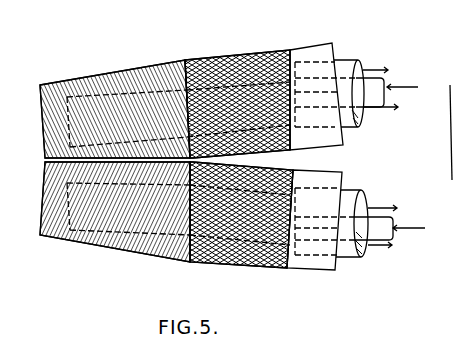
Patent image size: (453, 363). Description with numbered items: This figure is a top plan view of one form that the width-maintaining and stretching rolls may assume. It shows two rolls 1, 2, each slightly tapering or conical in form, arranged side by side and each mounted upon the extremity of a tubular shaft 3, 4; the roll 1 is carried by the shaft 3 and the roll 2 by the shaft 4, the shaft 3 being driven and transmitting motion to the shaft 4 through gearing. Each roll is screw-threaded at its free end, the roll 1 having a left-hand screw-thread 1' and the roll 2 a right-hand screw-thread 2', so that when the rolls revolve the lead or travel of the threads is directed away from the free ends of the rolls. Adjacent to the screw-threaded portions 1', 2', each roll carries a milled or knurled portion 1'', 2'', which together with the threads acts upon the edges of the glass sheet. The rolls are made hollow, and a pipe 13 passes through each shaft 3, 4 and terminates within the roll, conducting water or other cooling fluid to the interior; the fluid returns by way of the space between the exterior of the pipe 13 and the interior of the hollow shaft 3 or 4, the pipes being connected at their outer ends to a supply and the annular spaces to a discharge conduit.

The roll 1 is at (319, 77).
The left-hand screw-thread 1' is at (115, 94).
The milled or knurled portion 1'' is at (237, 86).
The roll 2 is at (321, 245).
The right-hand screw-thread 2' is at (115, 231).
The milled or knurled portion 2'' is at (241, 236).
The tubular shaft 3 is at (350, 60).
The tubular shaft 4 is at (355, 257).
The pipe 13 is at (378, 65).